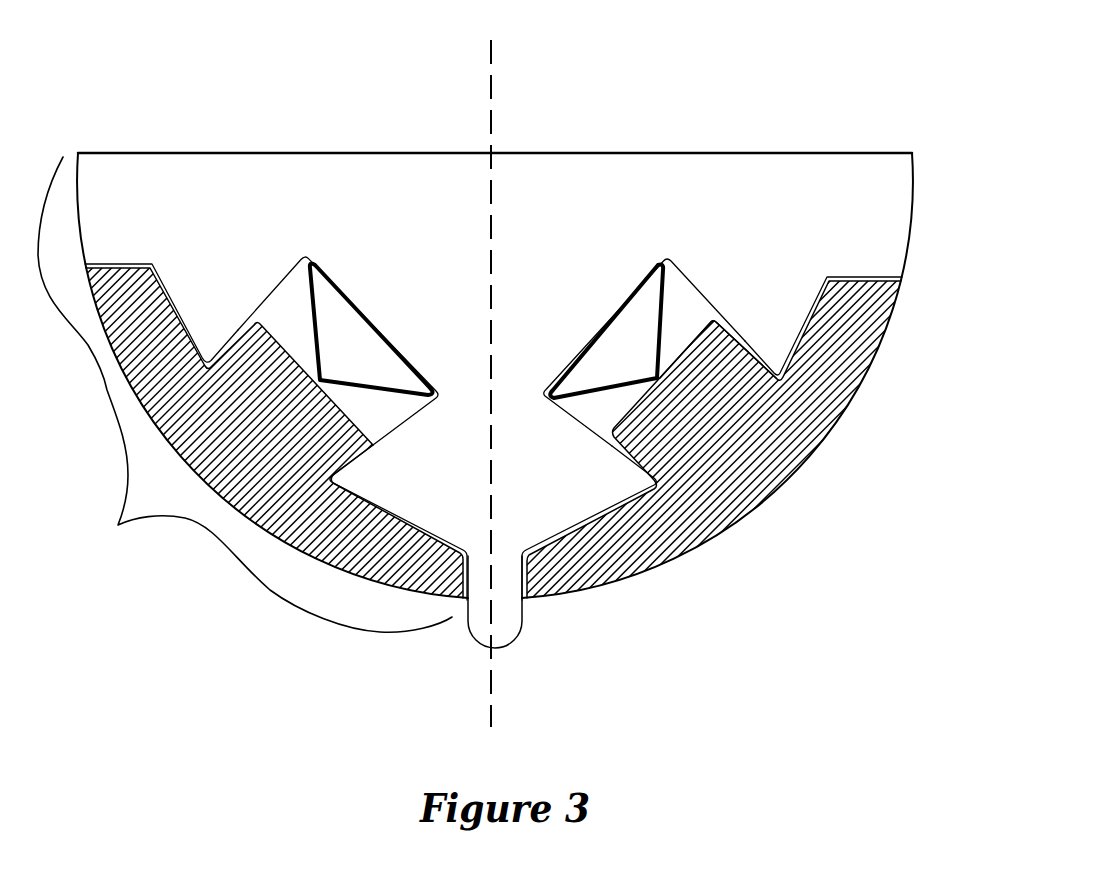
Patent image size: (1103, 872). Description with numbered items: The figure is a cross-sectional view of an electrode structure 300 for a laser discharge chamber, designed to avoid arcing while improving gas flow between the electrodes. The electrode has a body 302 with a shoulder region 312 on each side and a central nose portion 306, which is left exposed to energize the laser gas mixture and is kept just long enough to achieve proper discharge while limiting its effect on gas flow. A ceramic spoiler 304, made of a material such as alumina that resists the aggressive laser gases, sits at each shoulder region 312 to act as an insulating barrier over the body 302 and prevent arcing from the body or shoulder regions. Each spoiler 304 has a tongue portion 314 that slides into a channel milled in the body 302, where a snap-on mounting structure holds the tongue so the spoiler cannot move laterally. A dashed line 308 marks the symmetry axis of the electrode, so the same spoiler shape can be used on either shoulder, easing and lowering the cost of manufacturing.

The electrode structure 300 is at (781, 99).
The electrode body 302 is at (407, 200).
The ceramic spoiler 304 is at (747, 437).
The nose portion 306 is at (508, 625).
The symmetry axis 308 is at (493, 112).
The shoulder region 312 is at (245, 394).
The tongue portion 314 is at (715, 373).